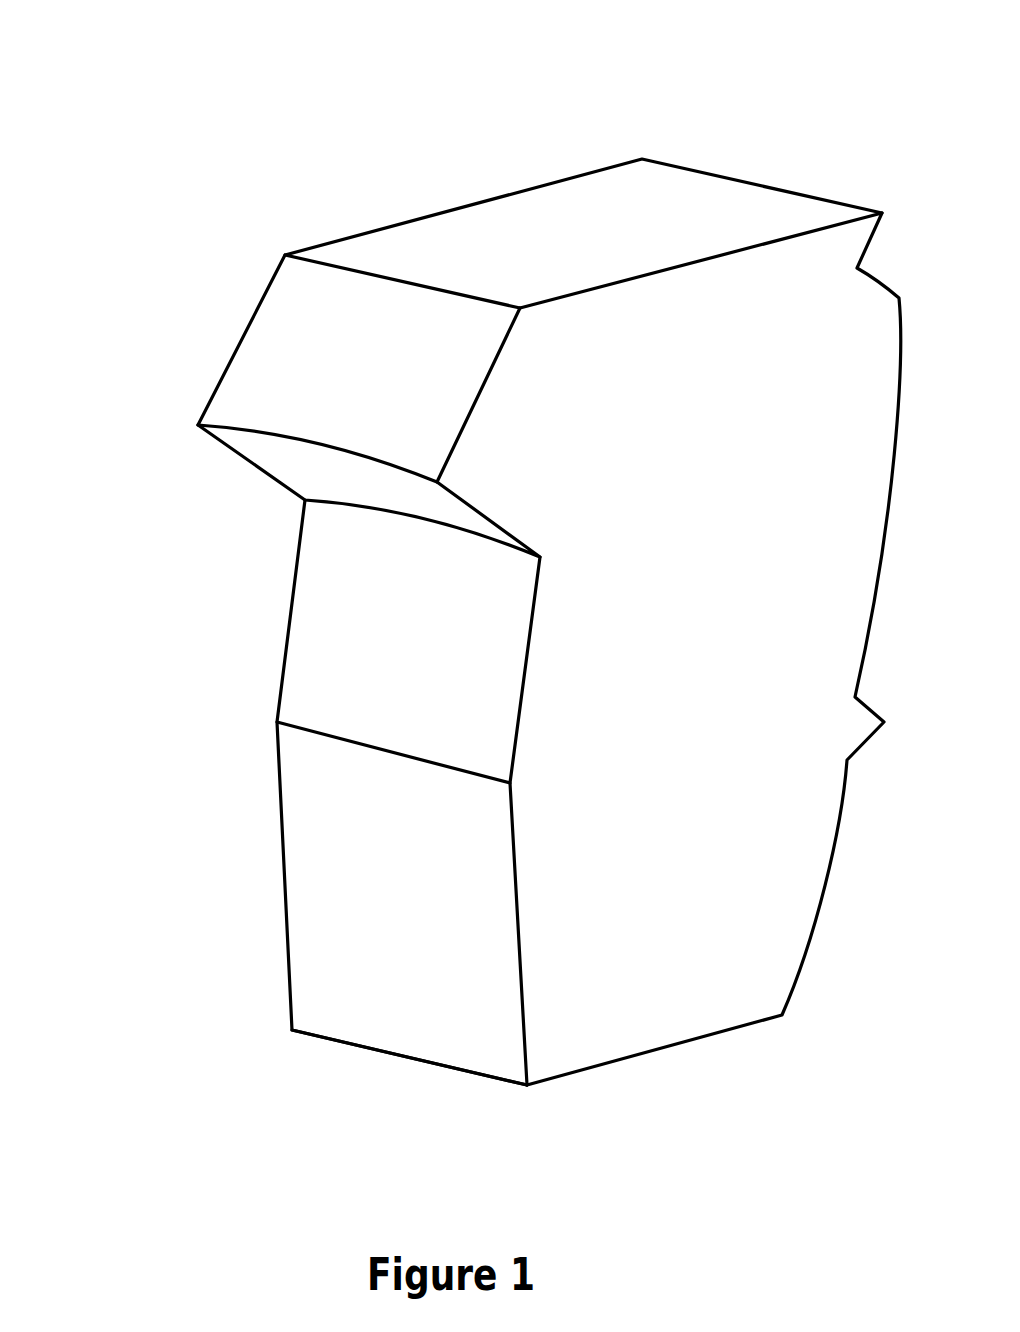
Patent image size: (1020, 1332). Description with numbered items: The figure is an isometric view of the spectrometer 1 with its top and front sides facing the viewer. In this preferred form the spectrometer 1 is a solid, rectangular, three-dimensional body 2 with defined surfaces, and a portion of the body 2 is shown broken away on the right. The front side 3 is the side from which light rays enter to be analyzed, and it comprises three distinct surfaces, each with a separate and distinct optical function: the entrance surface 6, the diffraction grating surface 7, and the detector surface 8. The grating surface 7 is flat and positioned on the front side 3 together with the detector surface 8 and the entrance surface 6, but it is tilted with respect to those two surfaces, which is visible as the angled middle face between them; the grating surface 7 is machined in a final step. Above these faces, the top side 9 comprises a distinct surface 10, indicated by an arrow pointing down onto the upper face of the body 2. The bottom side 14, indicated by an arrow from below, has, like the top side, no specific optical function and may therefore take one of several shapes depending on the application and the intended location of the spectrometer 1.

The spectrometer 1 is at (298, 171).
The body 2 is at (817, 143).
The front side 3 is at (116, 680).
The entrance surface 6 is at (328, 853).
The diffraction grating surface 7 is at (328, 600).
The detector surface 8 is at (330, 343).
The top side 9 is at (492, 98).
The top surface 10 is at (575, 214).
The bottom side 14 is at (444, 1117).